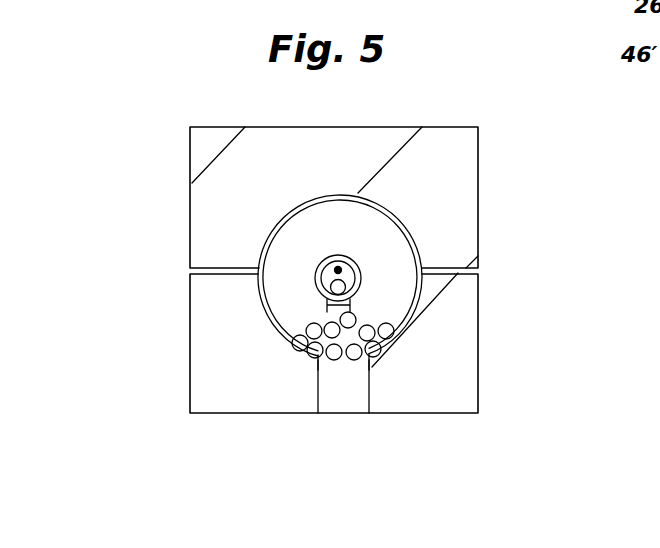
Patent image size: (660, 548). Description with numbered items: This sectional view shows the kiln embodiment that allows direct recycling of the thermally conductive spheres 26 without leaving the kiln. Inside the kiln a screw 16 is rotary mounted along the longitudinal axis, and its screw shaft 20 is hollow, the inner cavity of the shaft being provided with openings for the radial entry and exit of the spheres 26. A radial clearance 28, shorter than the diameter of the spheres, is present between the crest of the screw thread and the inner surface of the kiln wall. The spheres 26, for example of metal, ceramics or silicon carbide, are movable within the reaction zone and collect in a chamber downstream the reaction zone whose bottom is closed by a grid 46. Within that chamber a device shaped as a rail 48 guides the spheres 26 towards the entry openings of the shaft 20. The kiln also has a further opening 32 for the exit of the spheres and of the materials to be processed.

The screw 16 is at (447, 248).
The radial clearance 28 is at (277, 227).
The screw shaft 20 is at (315, 273).
The rail 48 is at (362, 302).
The spheres 26 is at (310, 357).
The further opening 32 is at (340, 393).
The grid 46 is at (350, 358).